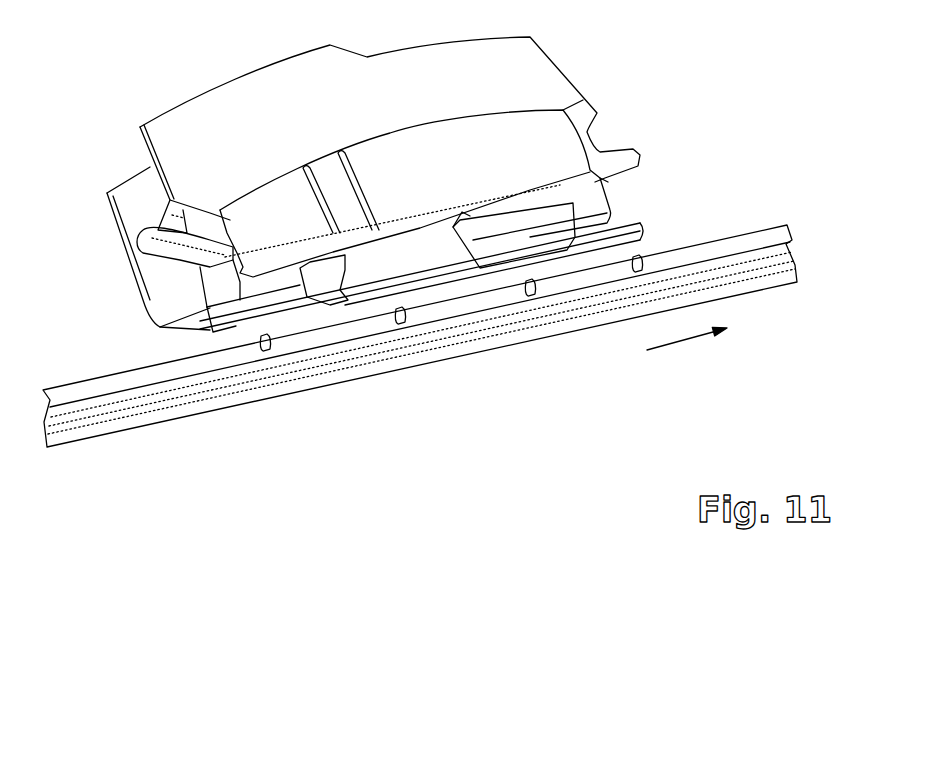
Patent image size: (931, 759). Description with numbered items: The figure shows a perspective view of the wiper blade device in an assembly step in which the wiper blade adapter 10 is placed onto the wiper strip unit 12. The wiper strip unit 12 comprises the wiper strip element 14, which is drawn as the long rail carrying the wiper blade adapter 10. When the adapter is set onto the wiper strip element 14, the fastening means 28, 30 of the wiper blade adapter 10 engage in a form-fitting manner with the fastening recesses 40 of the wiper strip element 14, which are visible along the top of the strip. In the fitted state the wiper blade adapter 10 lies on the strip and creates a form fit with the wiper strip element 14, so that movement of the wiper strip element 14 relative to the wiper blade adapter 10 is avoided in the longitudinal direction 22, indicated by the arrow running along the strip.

The wiper blade adapter 10 is at (181, 71).
The wiper strip unit 12 is at (155, 433).
The wiper strip element 14 is at (252, 377).
The longitudinal direction 22 is at (680, 343).
The fastening means 28 is at (253, 273).
The fastening means 30 is at (563, 253).
The fastening recesses 40 is at (563, 283).